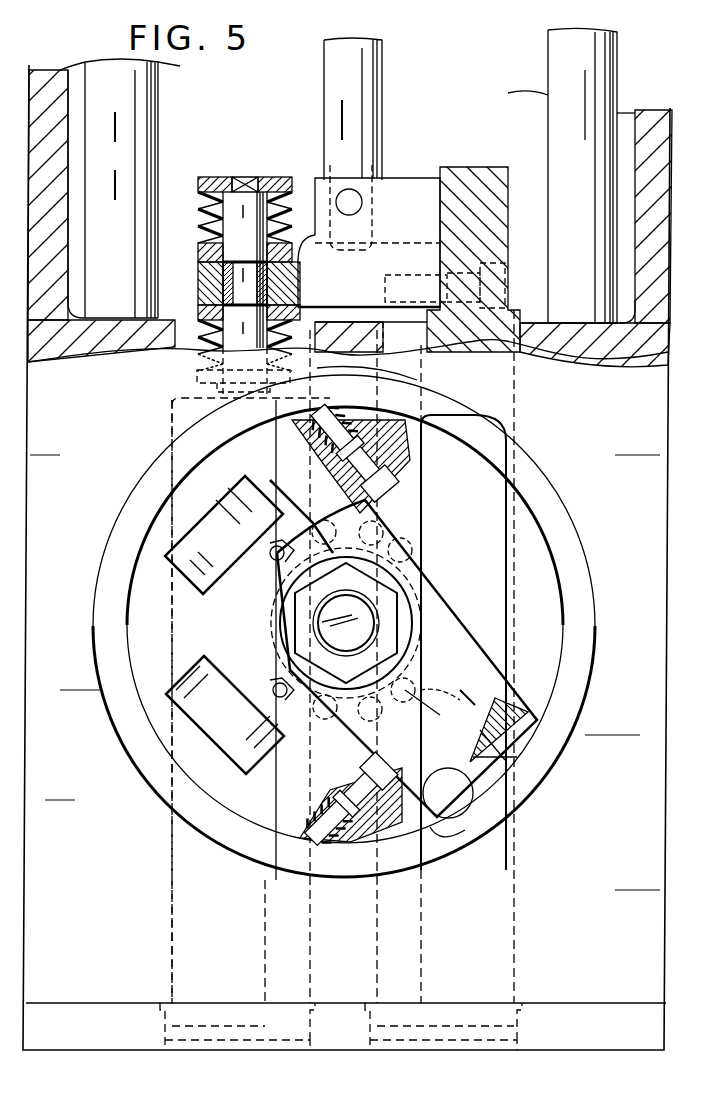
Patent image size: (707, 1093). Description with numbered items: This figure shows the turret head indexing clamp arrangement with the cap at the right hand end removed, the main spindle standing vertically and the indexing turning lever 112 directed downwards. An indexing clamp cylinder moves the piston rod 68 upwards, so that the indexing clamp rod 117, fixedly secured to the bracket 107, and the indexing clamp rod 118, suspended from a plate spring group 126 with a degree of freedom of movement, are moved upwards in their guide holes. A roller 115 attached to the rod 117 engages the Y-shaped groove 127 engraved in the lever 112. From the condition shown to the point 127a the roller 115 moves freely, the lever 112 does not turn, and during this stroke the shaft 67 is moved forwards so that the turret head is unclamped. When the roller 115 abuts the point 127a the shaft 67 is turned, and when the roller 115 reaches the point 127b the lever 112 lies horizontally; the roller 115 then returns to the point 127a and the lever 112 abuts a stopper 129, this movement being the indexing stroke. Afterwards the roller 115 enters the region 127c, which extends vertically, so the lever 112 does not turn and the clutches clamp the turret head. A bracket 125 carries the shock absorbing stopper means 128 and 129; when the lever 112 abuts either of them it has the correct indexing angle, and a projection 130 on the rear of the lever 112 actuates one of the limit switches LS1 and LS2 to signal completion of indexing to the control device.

The piston rod 68 is at (360, 73).
The bracket 107 is at (405, 180).
The indexing clamp rod 117 is at (472, 180).
The plate spring group 126 is at (203, 215).
The stopper 129 is at (322, 418).
The indexing clamp rod 118 is at (178, 405).
The limit switch LS1 is at (232, 492).
The limit switch LS2 is at (190, 668).
The bracket 125 is at (158, 522).
The projection 130 is at (270, 562).
The shaft 67 is at (365, 625).
The indexing turning lever 112 is at (447, 640).
The Y-shaped groove 127 is at (518, 700).
The point 127a is at (462, 698).
The point 127b is at (408, 700).
The region 127c is at (497, 758).
The stopper 128 is at (326, 835).
The roller 115 is at (450, 795).